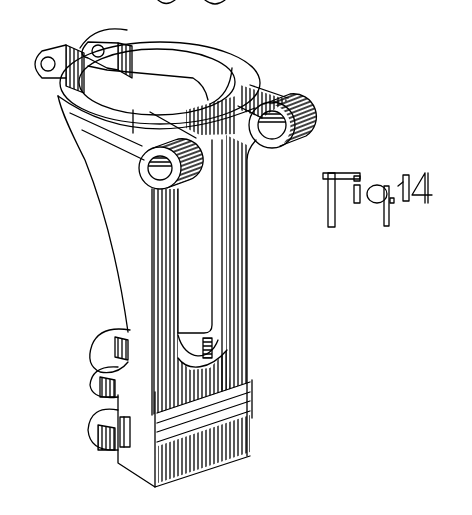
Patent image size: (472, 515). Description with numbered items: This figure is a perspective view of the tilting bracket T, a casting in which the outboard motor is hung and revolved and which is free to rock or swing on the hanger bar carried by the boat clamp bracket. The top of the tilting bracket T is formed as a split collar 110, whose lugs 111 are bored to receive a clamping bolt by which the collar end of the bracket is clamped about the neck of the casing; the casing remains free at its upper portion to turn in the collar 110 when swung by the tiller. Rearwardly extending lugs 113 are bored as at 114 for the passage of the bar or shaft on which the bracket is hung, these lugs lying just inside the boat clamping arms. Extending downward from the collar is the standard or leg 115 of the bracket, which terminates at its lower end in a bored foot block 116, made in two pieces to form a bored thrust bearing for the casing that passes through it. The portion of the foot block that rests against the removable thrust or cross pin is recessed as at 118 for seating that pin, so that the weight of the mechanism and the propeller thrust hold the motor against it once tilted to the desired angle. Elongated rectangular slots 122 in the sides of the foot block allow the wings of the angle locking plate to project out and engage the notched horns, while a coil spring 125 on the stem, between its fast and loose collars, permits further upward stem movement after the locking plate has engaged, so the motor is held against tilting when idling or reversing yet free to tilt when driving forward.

The split collar 110 is at (200, 62).
The lugs 111 is at (108, 50).
The rearwardly extending lugs 113 is at (151, 185).
The bore 114 is at (150, 163).
The standard or leg 115 is at (248, 265).
The foot block 116 is at (232, 372).
The recess 118 is at (193, 423).
The elongated rectangular slots 122 is at (105, 448).
The coil spring 125 is at (218, 345).
The tilting bracket T is at (240, 213).